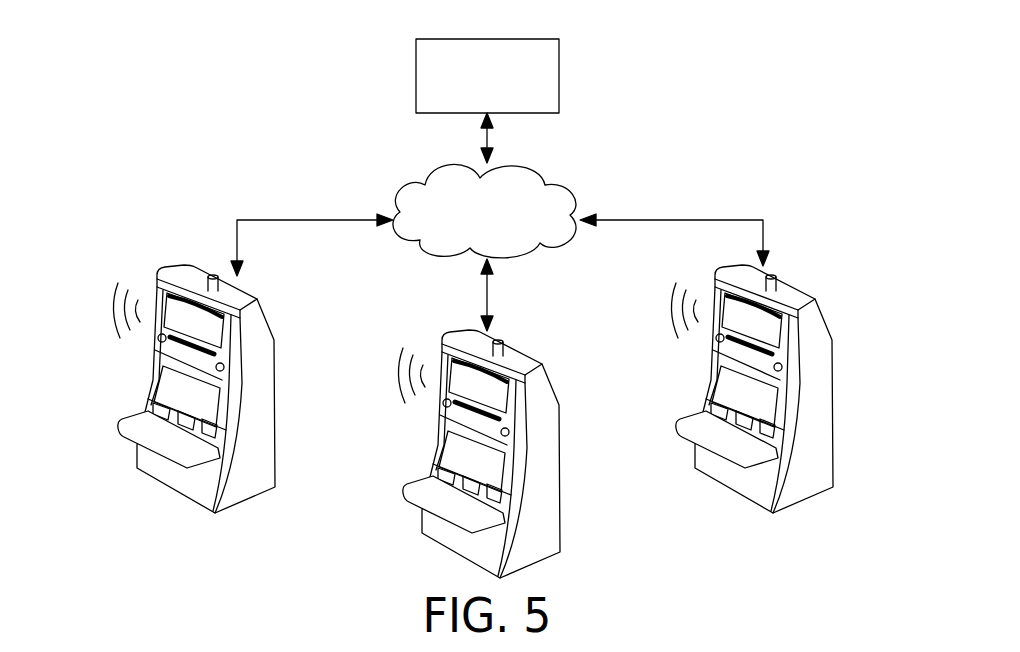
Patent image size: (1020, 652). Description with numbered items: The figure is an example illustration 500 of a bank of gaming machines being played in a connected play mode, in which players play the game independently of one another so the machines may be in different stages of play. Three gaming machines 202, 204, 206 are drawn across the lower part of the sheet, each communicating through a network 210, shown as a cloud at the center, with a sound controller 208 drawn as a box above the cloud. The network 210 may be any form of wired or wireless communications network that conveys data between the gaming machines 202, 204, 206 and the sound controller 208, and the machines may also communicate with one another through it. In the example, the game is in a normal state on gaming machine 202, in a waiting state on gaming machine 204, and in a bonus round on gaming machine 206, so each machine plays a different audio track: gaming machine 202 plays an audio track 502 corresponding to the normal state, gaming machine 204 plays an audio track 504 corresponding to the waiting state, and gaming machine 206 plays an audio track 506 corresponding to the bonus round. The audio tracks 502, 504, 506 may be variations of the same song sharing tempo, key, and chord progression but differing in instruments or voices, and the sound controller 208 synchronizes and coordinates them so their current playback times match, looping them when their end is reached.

The illustration 500 is at (276, 60).
The sound controller 208 is at (417, 50).
The network 210 is at (418, 185).
The gaming machine 202 is at (262, 475).
The gaming machine 204 is at (491, 448).
The gaming machine 206 is at (764, 383).
The audio track 502 is at (110, 309).
The audio track 504 is at (371, 375).
The audio track 506 is at (644, 310).